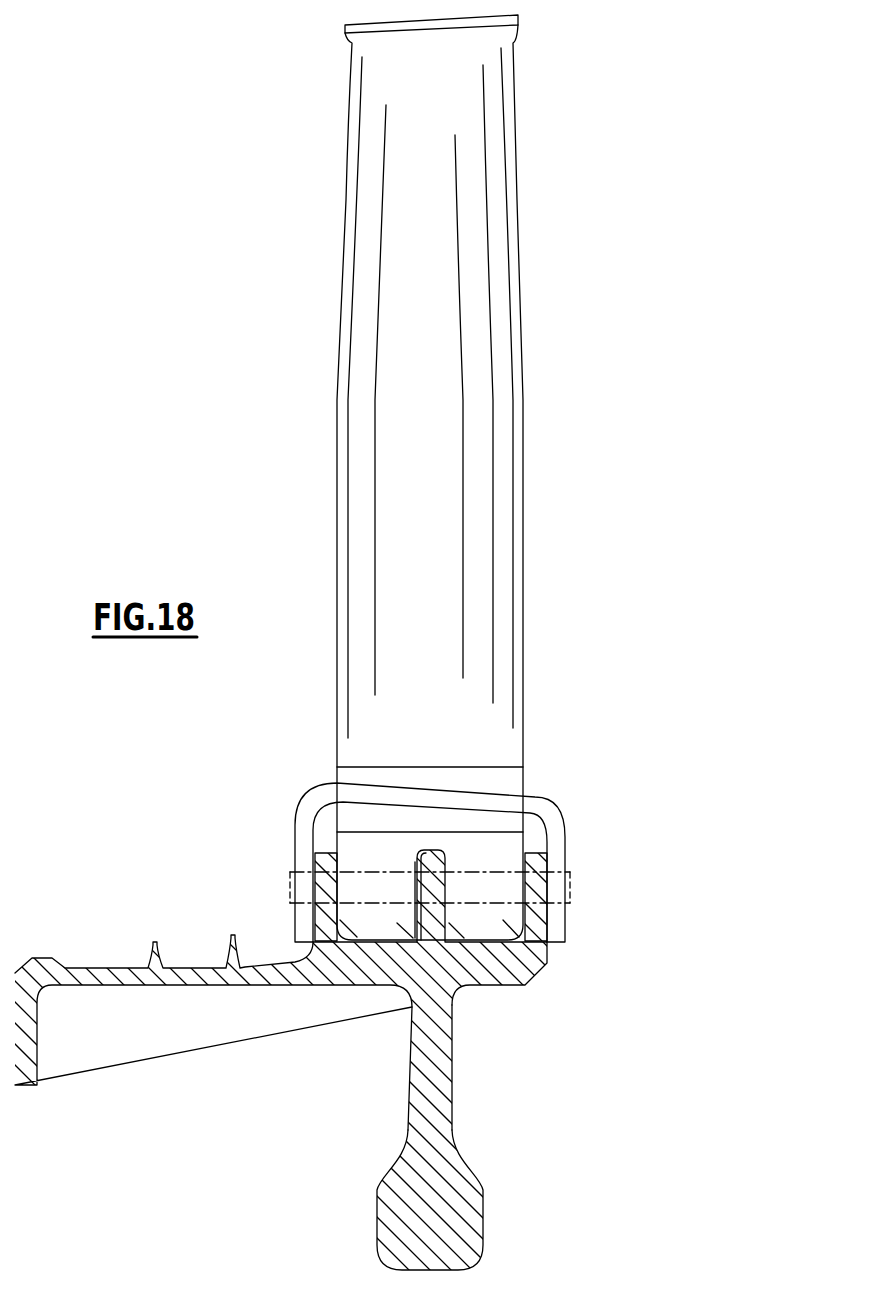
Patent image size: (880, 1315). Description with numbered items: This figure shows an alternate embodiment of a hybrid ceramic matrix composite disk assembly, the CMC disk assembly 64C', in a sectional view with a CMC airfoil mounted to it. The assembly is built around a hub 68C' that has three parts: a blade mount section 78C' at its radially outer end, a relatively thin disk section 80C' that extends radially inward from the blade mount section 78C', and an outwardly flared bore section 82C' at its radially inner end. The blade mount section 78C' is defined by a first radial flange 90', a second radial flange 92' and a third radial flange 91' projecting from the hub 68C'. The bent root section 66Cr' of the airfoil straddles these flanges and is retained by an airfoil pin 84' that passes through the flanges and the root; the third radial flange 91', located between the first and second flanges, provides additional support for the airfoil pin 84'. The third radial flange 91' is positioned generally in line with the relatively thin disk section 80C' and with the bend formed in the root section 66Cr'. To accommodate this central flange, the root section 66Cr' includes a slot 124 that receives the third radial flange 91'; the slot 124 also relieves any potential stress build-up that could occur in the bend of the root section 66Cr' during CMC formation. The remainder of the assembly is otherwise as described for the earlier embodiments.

The CMC disk assembly 64C' is at (574, 477).
The root section 66Cr' is at (469, 862).
The first radial flange 90' is at (440, 1056).
The second radial flange 92' is at (440, 1060).
The airfoil pin 84' is at (397, 900).
The third radial flange 91' is at (389, 889).
The slot 124 is at (412, 913).
The blade mount section 78C' is at (440, 1060).
The relatively thin disk section 80C' is at (478, 1067).
The outwardly flared bore section 82C' is at (479, 1200).
The hub 68C' is at (483, 1137).